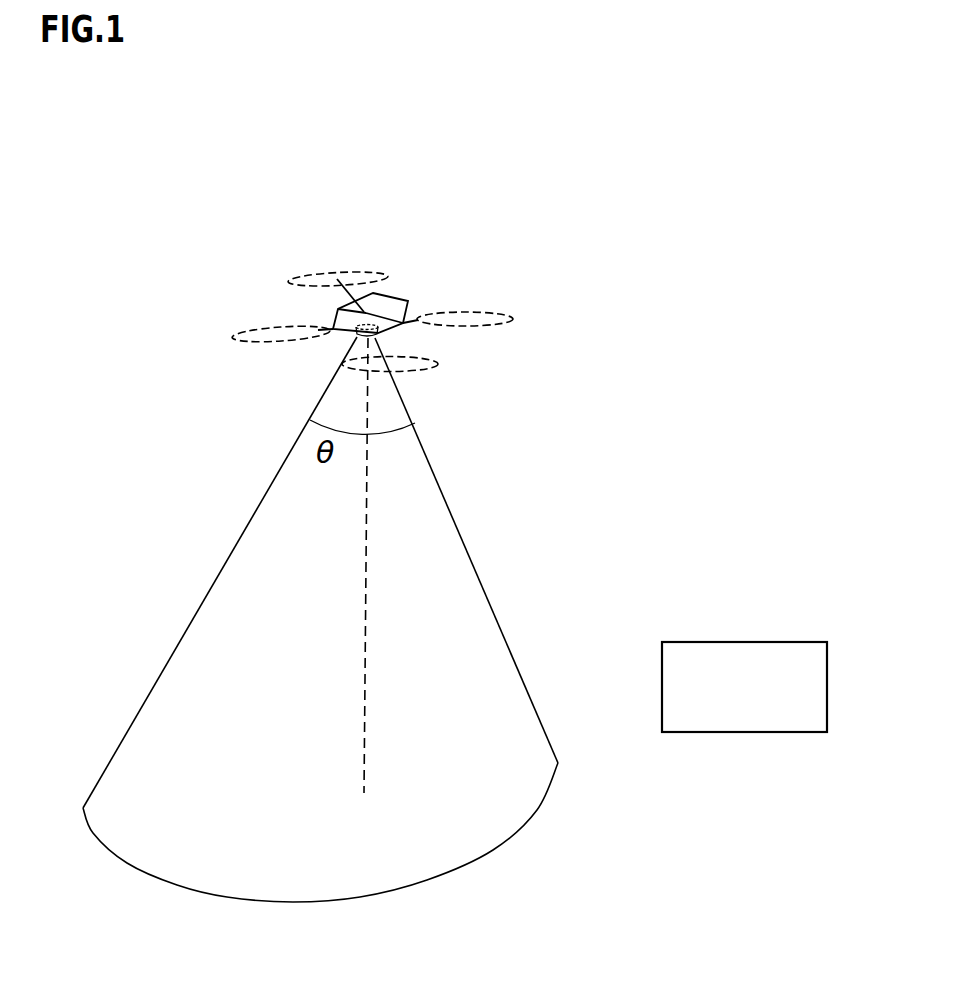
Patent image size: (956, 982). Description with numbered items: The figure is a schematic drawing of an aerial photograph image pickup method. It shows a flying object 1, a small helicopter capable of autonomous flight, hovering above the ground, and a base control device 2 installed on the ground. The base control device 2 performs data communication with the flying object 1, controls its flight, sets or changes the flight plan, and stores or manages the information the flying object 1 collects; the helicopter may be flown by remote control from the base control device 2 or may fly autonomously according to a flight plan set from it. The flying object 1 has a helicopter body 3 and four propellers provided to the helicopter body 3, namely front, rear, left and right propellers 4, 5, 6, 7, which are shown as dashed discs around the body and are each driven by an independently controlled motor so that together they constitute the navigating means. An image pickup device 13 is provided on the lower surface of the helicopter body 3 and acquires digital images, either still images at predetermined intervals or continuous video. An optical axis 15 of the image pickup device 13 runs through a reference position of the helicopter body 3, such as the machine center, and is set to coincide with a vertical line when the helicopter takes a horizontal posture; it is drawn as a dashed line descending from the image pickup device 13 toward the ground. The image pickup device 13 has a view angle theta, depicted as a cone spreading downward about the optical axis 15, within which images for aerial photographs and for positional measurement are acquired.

The flying object 1 is at (408, 293).
The base control device 2 is at (747, 642).
The helicopter body 3 is at (408, 306).
The front propeller 4 is at (295, 272).
The rear propeller 5 is at (495, 312).
The left propeller 6 is at (234, 339).
The right propeller 7 is at (420, 370).
The image pickup device 13 is at (357, 335).
The optical axis 15 is at (365, 592).